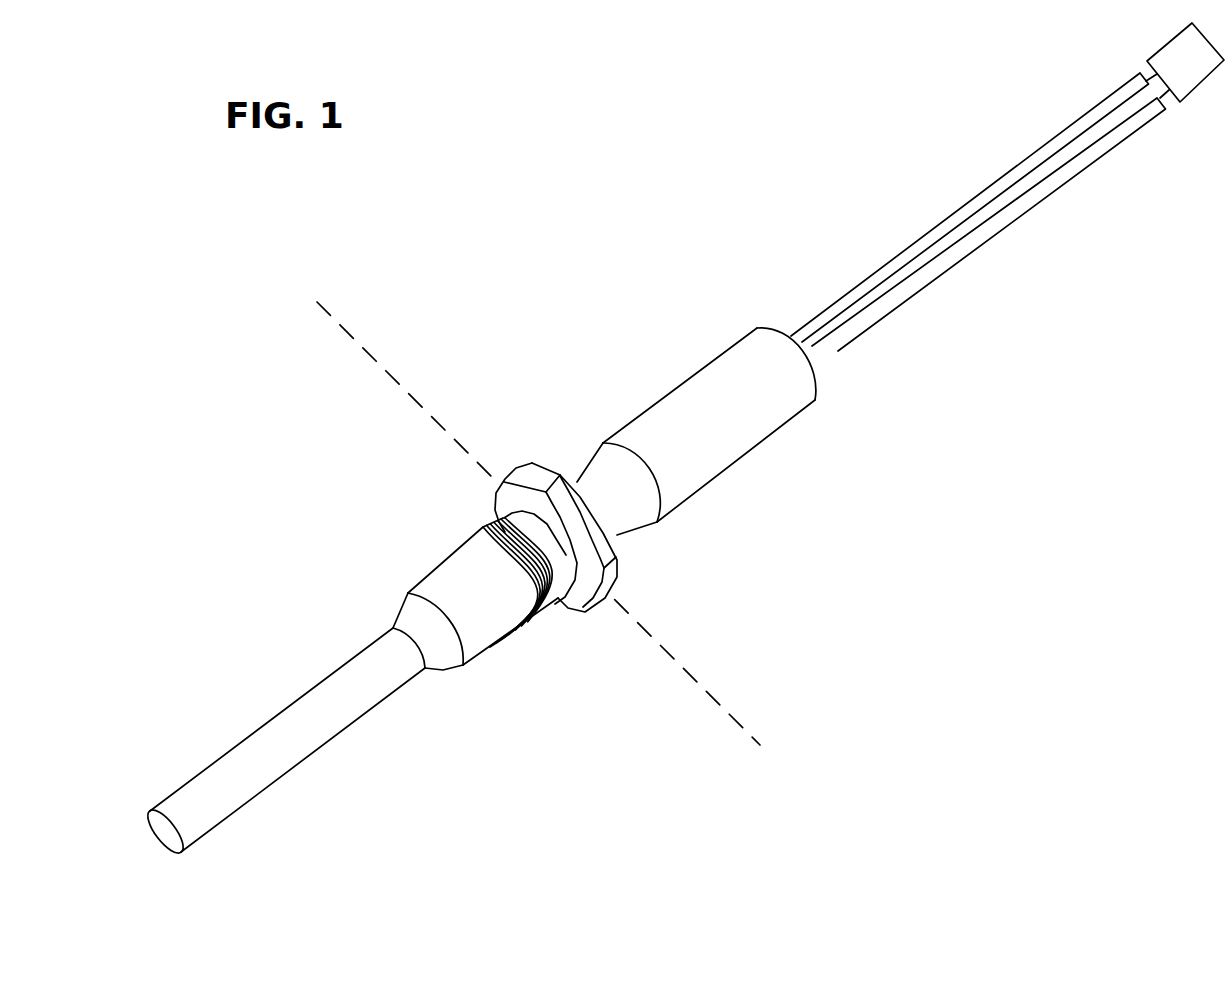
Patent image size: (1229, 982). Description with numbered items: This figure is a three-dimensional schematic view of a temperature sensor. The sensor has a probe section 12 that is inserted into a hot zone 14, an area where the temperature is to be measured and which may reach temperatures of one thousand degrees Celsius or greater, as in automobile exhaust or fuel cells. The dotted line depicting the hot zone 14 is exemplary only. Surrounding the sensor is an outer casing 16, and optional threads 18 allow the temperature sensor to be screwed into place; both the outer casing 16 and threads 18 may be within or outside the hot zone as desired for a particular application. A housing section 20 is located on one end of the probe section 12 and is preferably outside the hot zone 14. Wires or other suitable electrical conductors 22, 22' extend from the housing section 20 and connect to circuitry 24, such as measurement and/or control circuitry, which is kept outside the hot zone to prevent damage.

The probe section 12 is at (350, 562).
The hot zone 14 is at (211, 452).
The outer casing 16 is at (417, 528).
The threads 18 is at (522, 613).
The housing section 20 is at (667, 332).
The wire or electrical conductor 22 is at (970, 207).
The wire or electrical conductor 22' is at (989, 224).
The circuitry 24 is at (1158, 52).